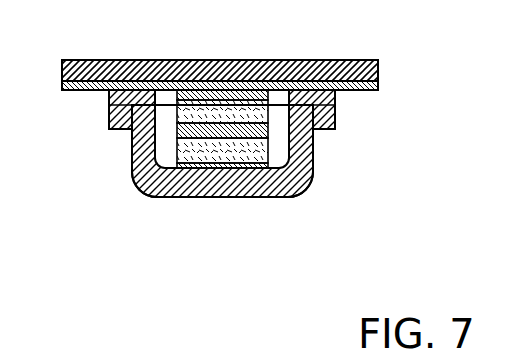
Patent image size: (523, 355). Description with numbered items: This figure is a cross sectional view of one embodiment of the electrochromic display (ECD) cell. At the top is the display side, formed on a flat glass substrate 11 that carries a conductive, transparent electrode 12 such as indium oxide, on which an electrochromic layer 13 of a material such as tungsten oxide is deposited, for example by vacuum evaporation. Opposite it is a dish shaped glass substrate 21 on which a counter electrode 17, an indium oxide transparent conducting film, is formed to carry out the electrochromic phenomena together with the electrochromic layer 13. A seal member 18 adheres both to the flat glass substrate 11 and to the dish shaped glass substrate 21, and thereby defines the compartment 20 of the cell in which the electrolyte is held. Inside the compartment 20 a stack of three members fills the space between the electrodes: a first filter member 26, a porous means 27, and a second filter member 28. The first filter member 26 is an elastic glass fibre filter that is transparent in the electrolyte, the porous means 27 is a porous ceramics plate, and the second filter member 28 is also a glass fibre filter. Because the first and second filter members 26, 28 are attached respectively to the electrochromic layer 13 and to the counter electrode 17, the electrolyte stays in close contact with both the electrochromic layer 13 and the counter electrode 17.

The flat glass substrate 11 is at (308, 60).
The conductive, transparent electrode 12 is at (363, 60).
The electrochromic layer 13 is at (257, 60).
The counter electrode 17 is at (268, 197).
The seal member 18 is at (108, 99).
The compartment 20 is at (162, 142).
The dish shaped glass substrate 21 is at (185, 197).
The first filter member 26 is at (258, 128).
The porous means 27 is at (275, 148).
The second filter member 28 is at (308, 177).